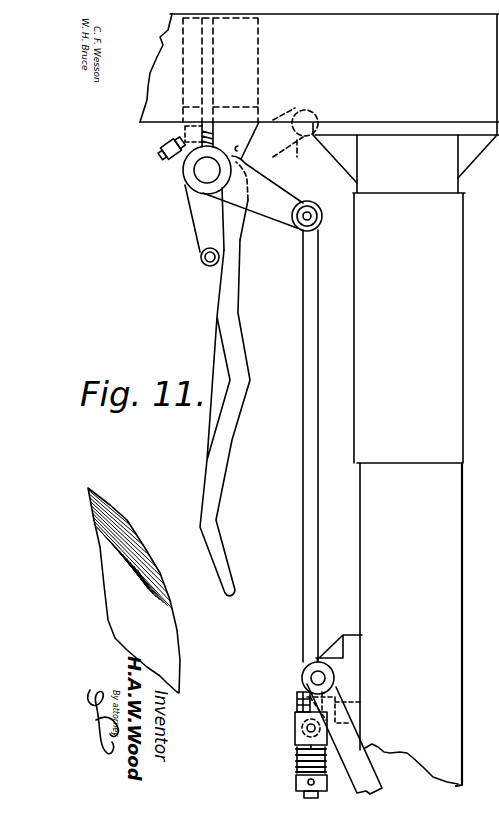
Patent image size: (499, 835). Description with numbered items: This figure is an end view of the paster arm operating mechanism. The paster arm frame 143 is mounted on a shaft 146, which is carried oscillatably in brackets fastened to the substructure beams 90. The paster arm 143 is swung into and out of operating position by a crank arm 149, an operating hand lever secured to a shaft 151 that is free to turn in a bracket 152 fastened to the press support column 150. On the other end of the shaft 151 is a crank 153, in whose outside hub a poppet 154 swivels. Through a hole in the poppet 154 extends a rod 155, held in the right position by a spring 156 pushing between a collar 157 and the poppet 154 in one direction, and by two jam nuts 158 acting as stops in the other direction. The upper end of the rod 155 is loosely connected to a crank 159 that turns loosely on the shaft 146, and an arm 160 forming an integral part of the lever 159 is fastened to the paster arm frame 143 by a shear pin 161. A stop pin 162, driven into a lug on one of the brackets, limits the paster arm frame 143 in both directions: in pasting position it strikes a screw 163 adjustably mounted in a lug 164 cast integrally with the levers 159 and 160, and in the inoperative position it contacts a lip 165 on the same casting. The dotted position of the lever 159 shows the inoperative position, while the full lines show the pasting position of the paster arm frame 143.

The substructure beams 90 is at (150, 95).
The paster arm frame 143 is at (212, 477).
The shaft 146 is at (177, 196).
The crank arm 149 is at (367, 786).
The press support column 150 is at (456, 606).
The shaft 151 is at (322, 677).
The bracket 152 is at (356, 643).
The crank 153 is at (348, 709).
The poppet 154 is at (286, 726).
The rod 155 is at (297, 287).
The spring 156 is at (286, 756).
The collar 157 is at (286, 786).
The jam nuts 158 is at (286, 699).
The crank 159 is at (292, 179).
The arm 160 is at (184, 240).
The shear pin 161 is at (198, 280).
The stop pin 162 is at (216, 137).
The screw 163 is at (151, 160).
The lug 164 is at (152, 134).
The lip 165 is at (240, 150).